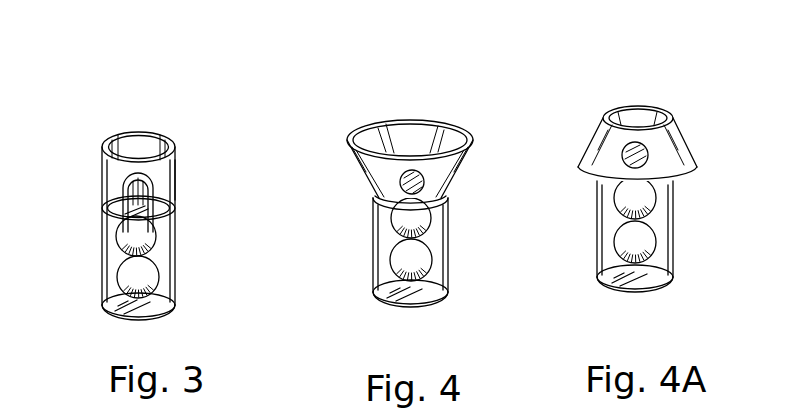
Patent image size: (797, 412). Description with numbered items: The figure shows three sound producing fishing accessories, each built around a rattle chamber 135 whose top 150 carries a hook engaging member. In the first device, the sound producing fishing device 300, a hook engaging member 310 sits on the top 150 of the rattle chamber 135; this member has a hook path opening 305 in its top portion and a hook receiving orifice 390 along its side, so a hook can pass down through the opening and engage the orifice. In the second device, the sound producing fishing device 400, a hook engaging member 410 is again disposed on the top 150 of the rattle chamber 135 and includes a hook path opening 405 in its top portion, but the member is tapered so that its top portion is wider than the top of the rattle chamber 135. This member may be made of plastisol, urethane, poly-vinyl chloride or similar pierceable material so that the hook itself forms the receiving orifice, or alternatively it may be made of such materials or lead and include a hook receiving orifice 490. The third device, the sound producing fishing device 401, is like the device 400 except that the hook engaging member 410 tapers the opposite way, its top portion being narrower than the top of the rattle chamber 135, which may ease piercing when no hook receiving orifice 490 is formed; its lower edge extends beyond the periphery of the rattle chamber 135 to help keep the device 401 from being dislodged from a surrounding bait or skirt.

In FIG. 3, the sound producing fishing device 300 is at (133, 112).
In FIG. 3, the hook path opening 305 is at (143, 147).
In FIG. 3, the hook engaging member 310 is at (173, 172).
In FIG. 3, the hook receiving orifice 390 is at (127, 182).
In FIG. 3, the top of the rattle chamber 150 is at (165, 200).
In FIG. 4, the top of the rattle chamber 150 is at (443, 193).
In FIG. 4A, the top of the rattle chamber 150 is at (640, 163).
In FIG. 3, the rattle chamber 135 is at (197, 248).
In FIG. 4, the rattle chamber 135 is at (470, 243).
In FIG. 4A, the rattle chamber 135 is at (682, 232).
In FIG. 4, the sound producing fishing device 400 is at (398, 88).
In FIG. 4, the hook engaging member 410 is at (370, 122).
In FIG. 4A, the hook engaging member 410 is at (640, 108).
In FIG. 4, the hook path opening 405 is at (405, 138).
In FIG. 4A, the hook path opening 405 is at (642, 120).
In FIG. 4, the hook receiving orifice 490 is at (420, 167).
In FIG. 4A, the hook receiving orifice 490 is at (648, 148).
In FIG. 4A, the sound producing fishing device 401 is at (633, 87).